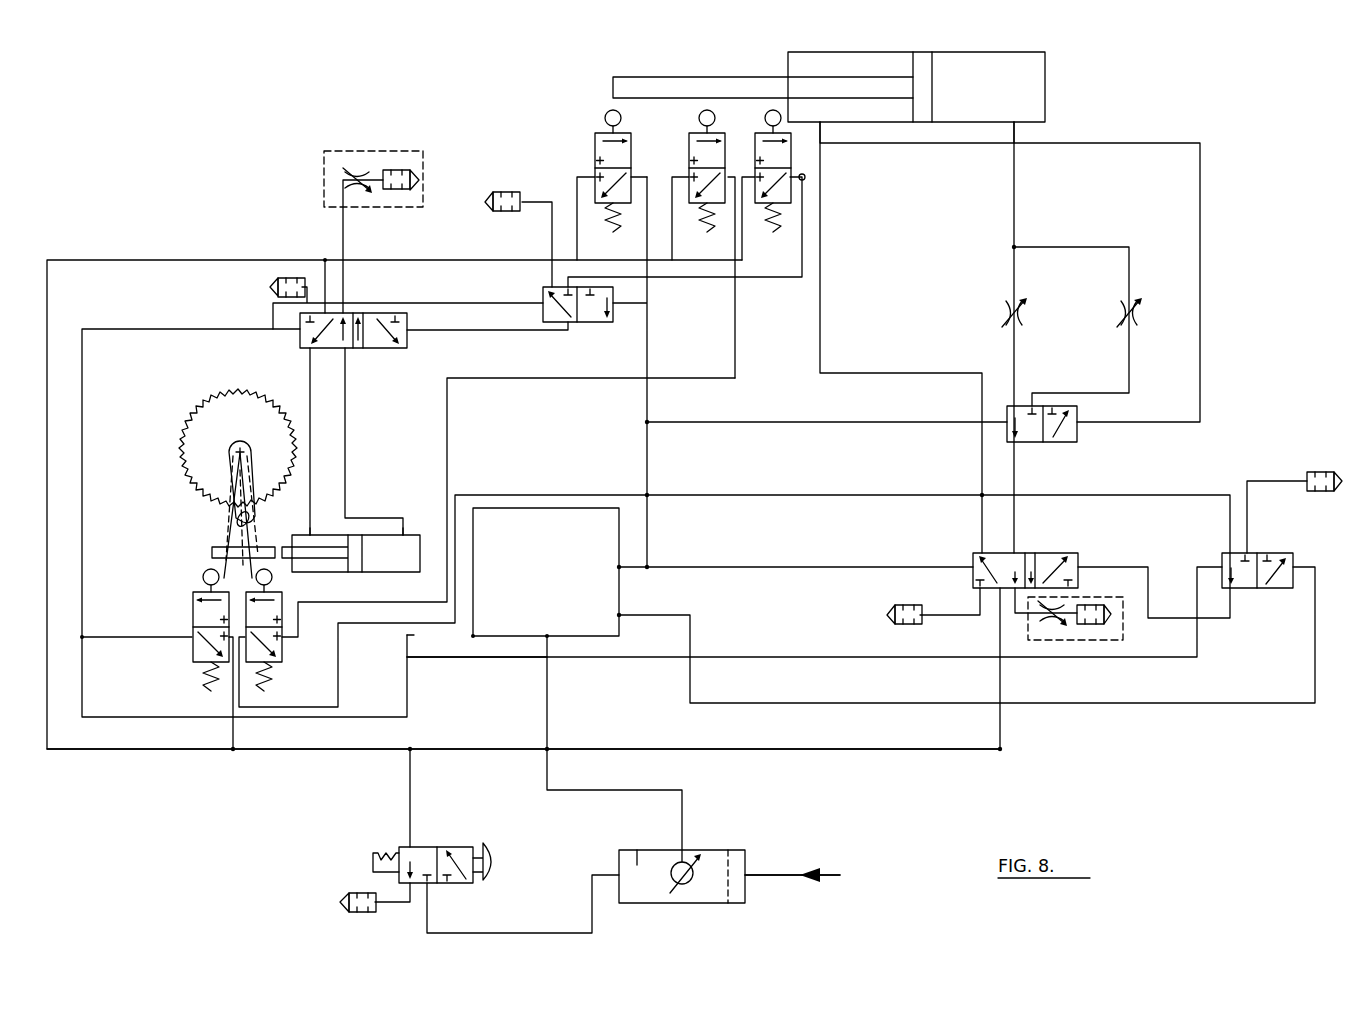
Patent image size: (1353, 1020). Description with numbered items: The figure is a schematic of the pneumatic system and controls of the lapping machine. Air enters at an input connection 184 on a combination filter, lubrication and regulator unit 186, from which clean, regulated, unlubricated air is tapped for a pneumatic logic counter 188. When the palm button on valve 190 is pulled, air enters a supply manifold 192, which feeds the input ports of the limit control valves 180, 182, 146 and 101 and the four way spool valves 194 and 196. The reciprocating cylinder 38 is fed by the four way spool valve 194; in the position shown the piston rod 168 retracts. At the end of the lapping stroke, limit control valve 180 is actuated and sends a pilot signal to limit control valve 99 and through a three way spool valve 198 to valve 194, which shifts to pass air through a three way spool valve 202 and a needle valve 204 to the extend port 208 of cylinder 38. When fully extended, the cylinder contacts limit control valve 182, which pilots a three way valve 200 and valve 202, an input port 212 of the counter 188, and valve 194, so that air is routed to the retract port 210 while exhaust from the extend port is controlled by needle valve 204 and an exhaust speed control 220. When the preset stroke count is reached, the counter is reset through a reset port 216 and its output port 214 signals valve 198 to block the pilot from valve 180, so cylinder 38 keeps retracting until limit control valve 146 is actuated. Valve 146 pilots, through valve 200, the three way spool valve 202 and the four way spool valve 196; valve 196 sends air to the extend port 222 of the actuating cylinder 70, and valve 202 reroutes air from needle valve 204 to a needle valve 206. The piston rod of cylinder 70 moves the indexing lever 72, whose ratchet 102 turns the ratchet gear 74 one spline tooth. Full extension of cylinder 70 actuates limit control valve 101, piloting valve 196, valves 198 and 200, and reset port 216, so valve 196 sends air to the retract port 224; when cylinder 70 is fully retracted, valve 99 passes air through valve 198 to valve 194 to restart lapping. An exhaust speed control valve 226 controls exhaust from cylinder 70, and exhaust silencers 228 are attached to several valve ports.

The reciprocating cylinder 38 is at (993, 50).
The piston rod 168 is at (827, 77).
The retract port 210 is at (822, 124).
The extend port 208 is at (1022, 124).
The limit control valve 182 is at (595, 150).
The limit control valve 180 is at (689, 150).
The limit control valve 146 is at (790, 154).
The exhaust speed control valve 226 is at (432, 130).
The exhaust silencer 228 is at (272, 286).
The four way spool valve 196 is at (368, 349).
The three way valve 200 is at (578, 322).
The needle valve 204 is at (1005, 311).
The needle valve 206 is at (1138, 320).
The three way spool valve 202 is at (1045, 442).
The ratchet gear 74 is at (200, 410).
The indexing lever 72 is at (229, 458).
The ratchet 102 is at (236, 521).
The actuating cylinder 70 is at (412, 572).
The retract port 224 is at (313, 531).
The extend port 222 is at (430, 505).
The pneumatic logic counter 188 is at (525, 508).
The input port 212 is at (621, 566).
The output port 214 is at (621, 617).
The reset port 216 is at (476, 636).
The limit control valve 101 is at (192, 615).
The limit control valve 99 is at (283, 643).
The four way spool valve 194 is at (1038, 553).
The three way spool valve 198 is at (1318, 524).
The exhaust speed control 220 is at (1093, 625).
The supply manifold 192 is at (350, 752).
The valve 190 is at (497, 857).
The combination filter, lubrication and regulator unit 186 is at (700, 850).
The input connection 184 is at (772, 875).